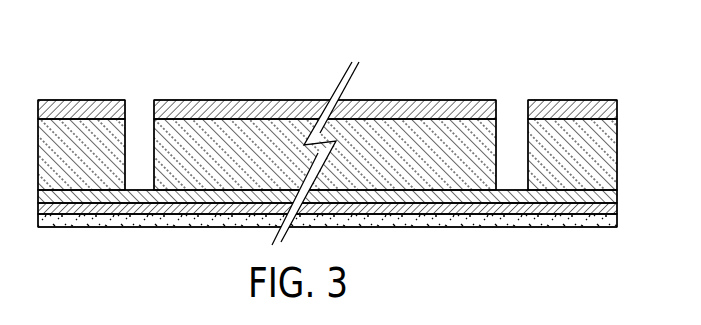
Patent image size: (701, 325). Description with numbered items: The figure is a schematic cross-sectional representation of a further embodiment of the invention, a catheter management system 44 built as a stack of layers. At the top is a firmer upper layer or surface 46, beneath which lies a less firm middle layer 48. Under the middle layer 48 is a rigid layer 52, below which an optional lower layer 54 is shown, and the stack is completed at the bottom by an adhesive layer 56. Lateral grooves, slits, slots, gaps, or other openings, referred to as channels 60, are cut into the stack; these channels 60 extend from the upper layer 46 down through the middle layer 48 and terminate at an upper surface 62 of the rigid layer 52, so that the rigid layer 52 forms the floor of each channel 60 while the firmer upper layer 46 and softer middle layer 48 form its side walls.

The catheter management system 44 is at (418, 73).
The upper layer 46 is at (617, 110).
The middle layer 48 is at (617, 158).
The rigid layer 52 is at (617, 196).
The lower layer 54 is at (617, 208).
The adhesive layer 56 is at (590, 220).
The channels 60 is at (512, 110).
The upper surface of rigid layer 62 is at (521, 184).